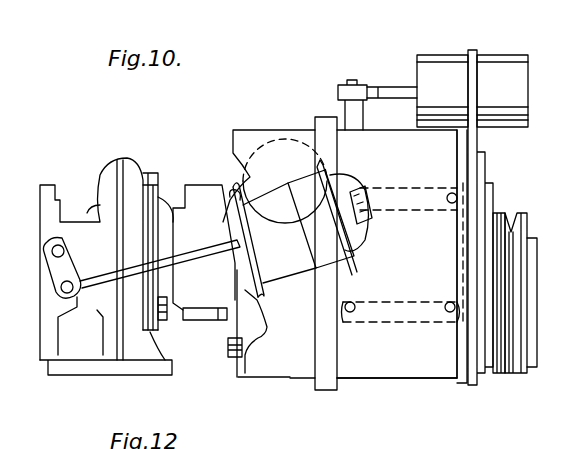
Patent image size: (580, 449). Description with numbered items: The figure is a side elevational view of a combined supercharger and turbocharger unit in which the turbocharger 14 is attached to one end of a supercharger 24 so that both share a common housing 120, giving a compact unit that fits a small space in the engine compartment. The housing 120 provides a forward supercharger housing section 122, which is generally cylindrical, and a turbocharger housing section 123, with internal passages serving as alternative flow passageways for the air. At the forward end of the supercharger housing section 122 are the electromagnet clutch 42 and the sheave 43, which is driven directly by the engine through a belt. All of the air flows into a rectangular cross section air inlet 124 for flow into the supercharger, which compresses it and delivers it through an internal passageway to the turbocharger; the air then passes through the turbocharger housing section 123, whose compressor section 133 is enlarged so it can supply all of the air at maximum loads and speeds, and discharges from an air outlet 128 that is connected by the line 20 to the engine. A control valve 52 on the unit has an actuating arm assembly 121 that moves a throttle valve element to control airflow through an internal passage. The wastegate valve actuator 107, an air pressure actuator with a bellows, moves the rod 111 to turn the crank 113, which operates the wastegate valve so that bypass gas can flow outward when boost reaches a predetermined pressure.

In FIG. 10, the turbocharger 14 is at (195, 106).
In FIG. 10, the crank 113 is at (78, 227).
In FIG. 10, the rod 111 is at (194, 182).
In FIG. 10, the compressor section 133 is at (306, 371).
In FIG. 10, the turbocharger housing section 123 is at (258, 378).
In FIG. 10, the housing 120 is at (358, 385).
In FIG. 10, the supercharger housing section 122 is at (391, 372).
In FIG. 10, the air outlet 128 is at (297, 110).
In FIG. 10, the air pressure actuator 107 is at (292, 273).
In FIG. 10, the air inlet 124 is at (380, 190).
In FIG. 10, the supercharger 24 is at (372, 40).
In FIG. 10, the actuating arm assembly 121 is at (388, 83).
In FIG. 10, the control valve 52 is at (503, 56).
In FIG. 10, the sheave 43 is at (528, 214).
In FIG. 10, the electromagnet clutch 42 is at (493, 368).
In FIG. 12, the line 20 is at (64, 439).